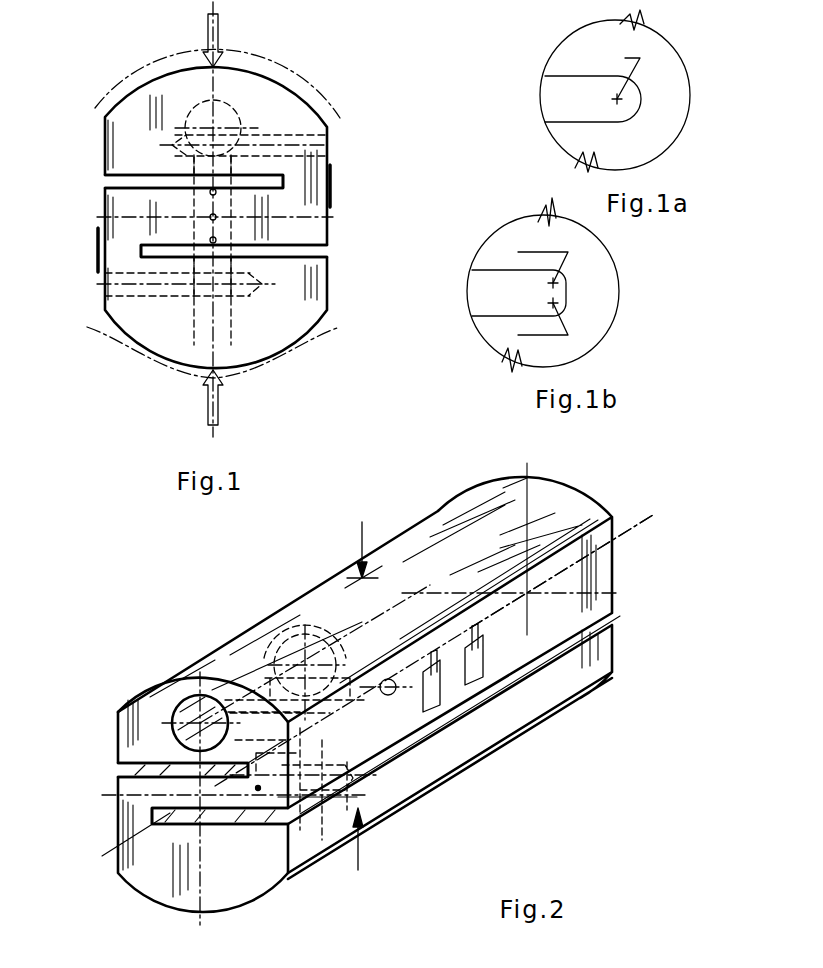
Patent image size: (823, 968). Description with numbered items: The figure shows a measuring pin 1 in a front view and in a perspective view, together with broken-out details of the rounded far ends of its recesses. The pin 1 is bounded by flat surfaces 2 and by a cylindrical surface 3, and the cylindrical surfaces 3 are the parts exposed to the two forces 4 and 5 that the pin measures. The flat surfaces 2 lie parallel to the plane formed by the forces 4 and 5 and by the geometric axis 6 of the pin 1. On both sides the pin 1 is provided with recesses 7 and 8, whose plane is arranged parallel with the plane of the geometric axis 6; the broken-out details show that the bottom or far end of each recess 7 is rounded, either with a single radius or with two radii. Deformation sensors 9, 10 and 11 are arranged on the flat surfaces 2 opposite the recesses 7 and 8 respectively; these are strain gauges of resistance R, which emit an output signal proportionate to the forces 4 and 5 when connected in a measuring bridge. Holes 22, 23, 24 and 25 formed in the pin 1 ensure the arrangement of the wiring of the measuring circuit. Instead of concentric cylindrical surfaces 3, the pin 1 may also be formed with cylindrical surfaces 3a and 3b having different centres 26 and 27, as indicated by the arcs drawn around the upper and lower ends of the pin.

In FIG. 1, the pin 1 is at (300, 90).
In FIG. 2, the pin 1 is at (423, 503).
In FIG. 1, the flat surfaces 2 is at (102, 208).
In FIG. 2, the flat surfaces 2 is at (120, 848).
In FIG. 2, the cylindrical surface 3 is at (140, 897).
In FIG. 1, the cylindrical surface 3a is at (138, 82).
In FIG. 1, the cylindrical surface 3b is at (298, 357).
In FIG. 1, the force 4 is at (218, 28).
In FIG. 2, the force 4 is at (360, 548).
In FIG. 1, the force 5 is at (206, 395).
In FIG. 2, the force 5 is at (360, 845).
In FIG. 1, the geometric axis 6 is at (210, 218).
In FIG. 2, the geometric axis 6 is at (640, 524).
In FIG. 1, the recess 7 is at (135, 180).
In FIG. 1A, the recess 7 is at (568, 114).
In FIG. 1B, the recess 7 is at (500, 308).
In FIG. 2, the recess 7 is at (143, 770).
In FIG. 1, the recess 8 is at (320, 253).
In FIG. 2, the recess 8 is at (590, 643).
In FIG. 1, the deformation sensor 9 is at (360, 186).
In FIG. 2, the deformation sensor 9 is at (478, 680).
In FIG. 2, the deformation sensor 10 is at (440, 715).
In FIG. 1, the deformation sensor 11 is at (55, 251).
In FIG. 1, the hole 22 is at (300, 135).
In FIG. 2, the hole 22 is at (350, 645).
In FIG. 1, the hole 23 is at (232, 107).
In FIG. 2, the hole 23 is at (175, 703).
In FIG. 1, the hole 24 is at (230, 320).
In FIG. 2, the hole 24 is at (265, 690).
In FIG. 1, the hole 25 is at (212, 242).
In FIG. 2, the hole 25 is at (258, 792).
In FIG. 1, the centre 26 is at (210, 190).
In FIG. 1, the centre 27 is at (108, 320).